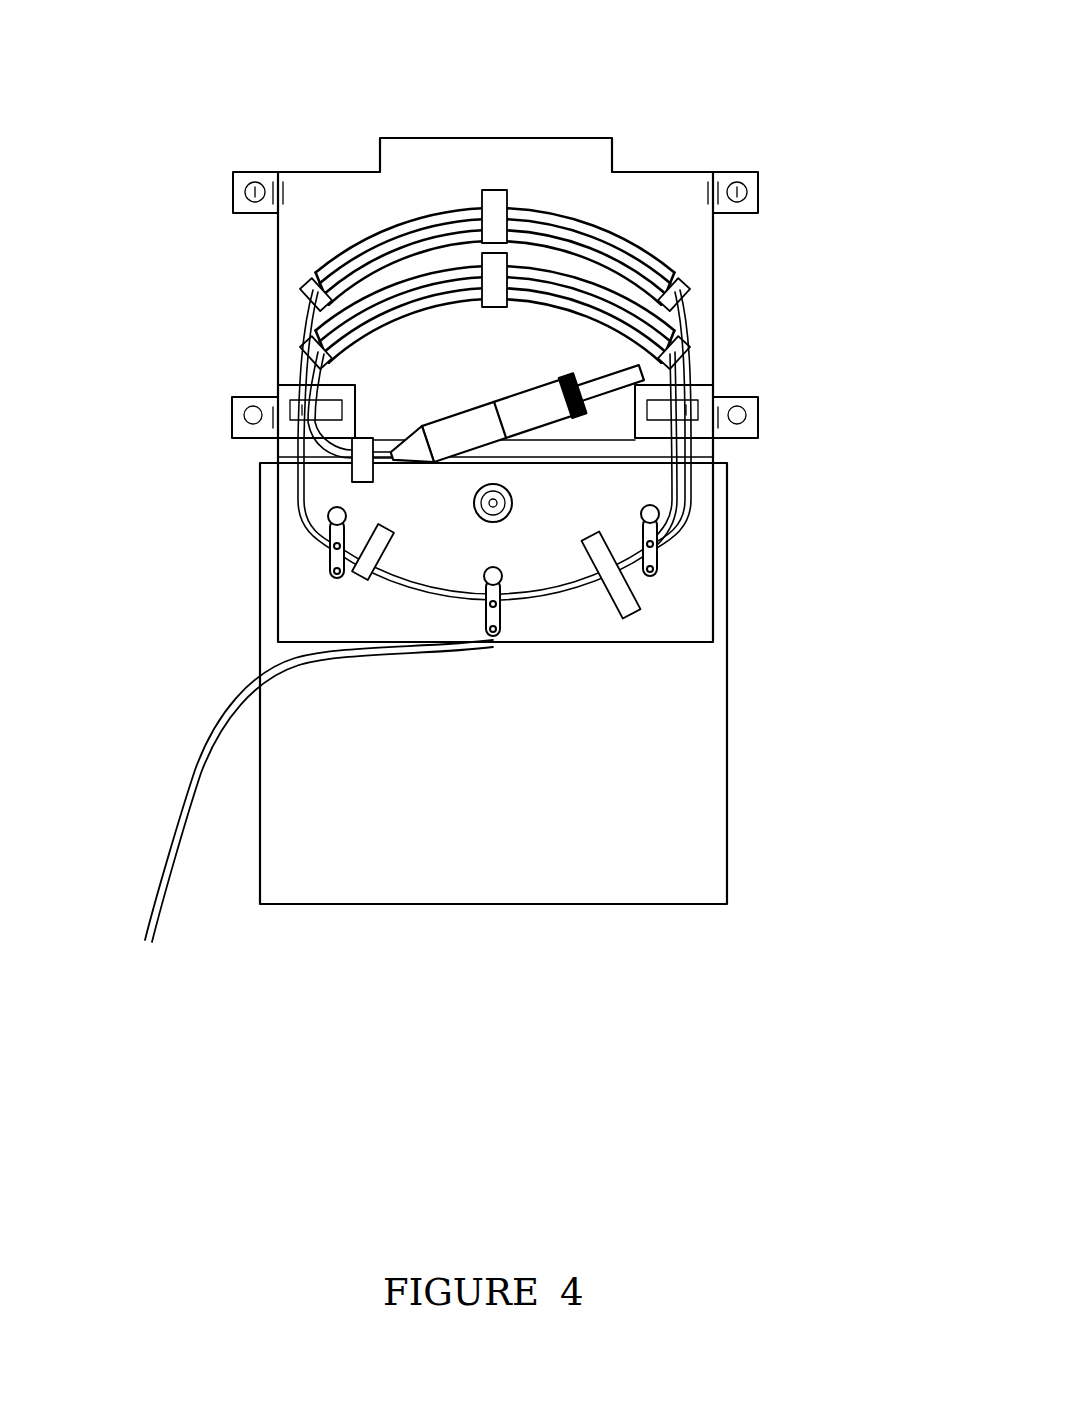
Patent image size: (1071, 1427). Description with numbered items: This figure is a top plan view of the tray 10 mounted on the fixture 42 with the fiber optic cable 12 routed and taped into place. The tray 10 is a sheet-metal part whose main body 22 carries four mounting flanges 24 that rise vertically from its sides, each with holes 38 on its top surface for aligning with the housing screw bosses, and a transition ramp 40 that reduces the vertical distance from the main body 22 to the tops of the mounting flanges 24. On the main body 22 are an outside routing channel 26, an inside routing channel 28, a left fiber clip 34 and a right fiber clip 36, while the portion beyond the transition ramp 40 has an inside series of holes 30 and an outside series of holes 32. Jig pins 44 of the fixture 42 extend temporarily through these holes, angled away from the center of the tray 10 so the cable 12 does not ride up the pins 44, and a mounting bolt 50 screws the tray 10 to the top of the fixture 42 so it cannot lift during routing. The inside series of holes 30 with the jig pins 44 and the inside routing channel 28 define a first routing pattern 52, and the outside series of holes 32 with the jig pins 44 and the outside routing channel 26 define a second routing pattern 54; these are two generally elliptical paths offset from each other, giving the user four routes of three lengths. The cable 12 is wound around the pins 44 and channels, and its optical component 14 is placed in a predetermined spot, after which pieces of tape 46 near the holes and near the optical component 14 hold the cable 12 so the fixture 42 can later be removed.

The tray 10 is at (542, 128).
The fiber optic cable 12 is at (152, 860).
The optical component 14 is at (465, 430).
The main body 22 is at (690, 243).
The mounting flanges 24 is at (258, 180).
The outside routing channel 26 is at (552, 215).
The inside routing channel 28 is at (690, 330).
The inside series of holes 30 is at (690, 505).
The outside series of holes 32 is at (325, 555).
The left fiber clip 34 is at (290, 395).
The right fiber clip 36 is at (690, 398).
The holes 38 is at (738, 195).
The transition ramp 40 is at (730, 462).
The fixture 42 is at (640, 906).
The jig pins 44 is at (330, 516).
The tape 46 is at (362, 440).
The mounting bolt 50 is at (515, 498).
The first routing pattern 52 is at (555, 596).
The second routing pattern 54 is at (545, 630).